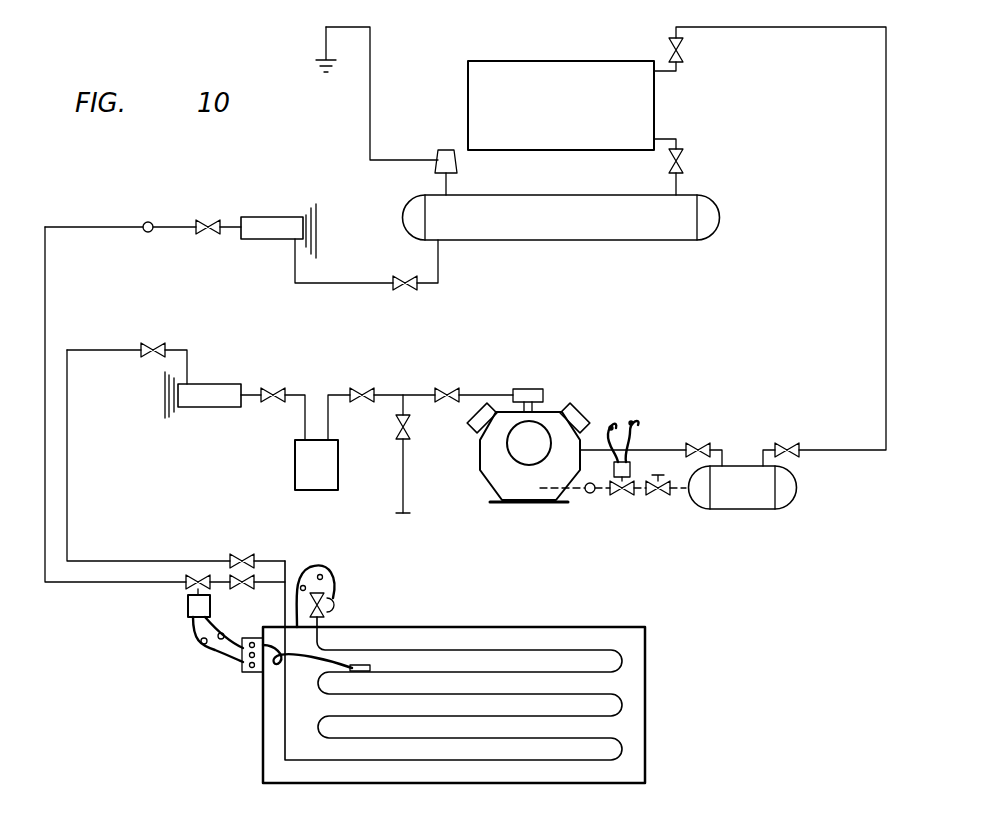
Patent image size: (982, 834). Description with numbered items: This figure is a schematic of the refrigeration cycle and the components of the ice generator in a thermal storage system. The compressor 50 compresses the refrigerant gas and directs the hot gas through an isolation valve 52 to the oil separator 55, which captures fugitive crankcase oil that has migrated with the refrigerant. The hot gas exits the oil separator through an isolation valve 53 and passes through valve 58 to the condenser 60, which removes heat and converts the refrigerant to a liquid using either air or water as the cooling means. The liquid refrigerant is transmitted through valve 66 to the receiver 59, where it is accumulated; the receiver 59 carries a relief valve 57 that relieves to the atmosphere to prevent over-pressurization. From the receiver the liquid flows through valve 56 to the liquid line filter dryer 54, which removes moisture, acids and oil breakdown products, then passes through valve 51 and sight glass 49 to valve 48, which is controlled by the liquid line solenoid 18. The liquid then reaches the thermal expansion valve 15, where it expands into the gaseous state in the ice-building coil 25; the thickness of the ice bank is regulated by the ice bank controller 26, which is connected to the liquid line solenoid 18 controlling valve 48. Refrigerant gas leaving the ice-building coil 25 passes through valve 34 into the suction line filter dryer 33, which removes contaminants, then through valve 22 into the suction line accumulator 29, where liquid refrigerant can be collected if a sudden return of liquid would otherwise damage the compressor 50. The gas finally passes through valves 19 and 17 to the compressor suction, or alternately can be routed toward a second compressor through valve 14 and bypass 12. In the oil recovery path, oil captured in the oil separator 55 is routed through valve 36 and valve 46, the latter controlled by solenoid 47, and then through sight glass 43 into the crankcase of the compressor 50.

The bypass 12 is at (400, 487).
The valve 14 is at (396, 428).
The thermal expansion valve 15 is at (338, 604).
The valve 17 is at (447, 388).
The liquid line solenoid 18 is at (188, 604).
The valve 19 is at (362, 388).
The valve 22 is at (274, 388).
The ice-building coil 25 is at (624, 706).
The ice bank controller 26 is at (366, 662).
The suction line accumulator 29 is at (295, 470).
The suction line filter dryer 33 is at (198, 410).
The valve 34 is at (154, 343).
The valve 36 is at (658, 496).
The sight glass 43 is at (588, 495).
The valve 46 is at (620, 496).
The solenoid 47 is at (631, 466).
The valve 48 is at (198, 574).
The sight glass 49 is at (147, 221).
The compressor 50 is at (478, 456).
The valve 51 is at (212, 237).
The isolation valve 52 is at (697, 443).
The isolation valve 53 is at (787, 443).
The liquid line filter dryer 54 is at (270, 216).
The oil separator 55 is at (752, 512).
The valve 56 is at (405, 292).
The relief valve 57 is at (444, 150).
The valve 58 is at (684, 52).
The receiver 59 is at (612, 243).
The condenser 60 is at (578, 62).
The valve 66 is at (684, 161).